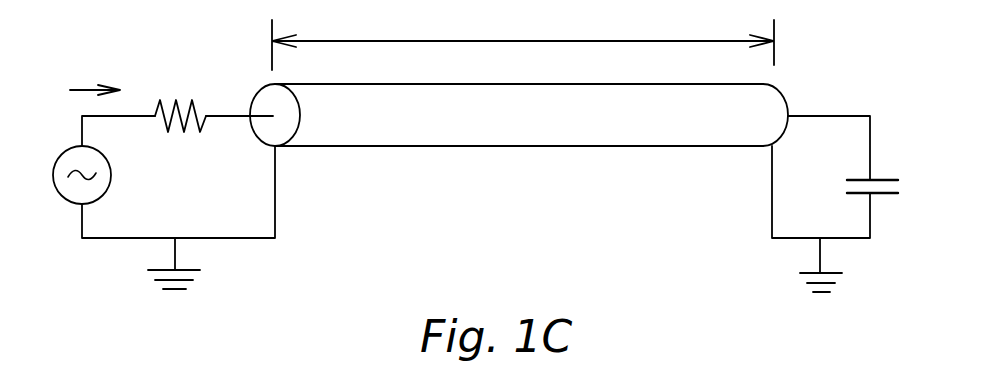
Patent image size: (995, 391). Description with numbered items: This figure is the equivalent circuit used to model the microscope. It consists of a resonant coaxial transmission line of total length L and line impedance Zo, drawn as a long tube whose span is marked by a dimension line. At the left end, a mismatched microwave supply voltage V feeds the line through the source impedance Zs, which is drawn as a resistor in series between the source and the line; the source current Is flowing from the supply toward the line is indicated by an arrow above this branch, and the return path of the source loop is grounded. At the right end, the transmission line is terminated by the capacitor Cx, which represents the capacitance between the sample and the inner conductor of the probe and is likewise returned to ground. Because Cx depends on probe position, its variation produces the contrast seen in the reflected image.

The source current Is is at (80, 91).
The source impedance Zs is at (180, 92).
The microwave supply voltage V is at (98, 175).
The line impedance Zo is at (519, 115).
The total length L is at (523, 40).
The capacitance Cx is at (875, 166).